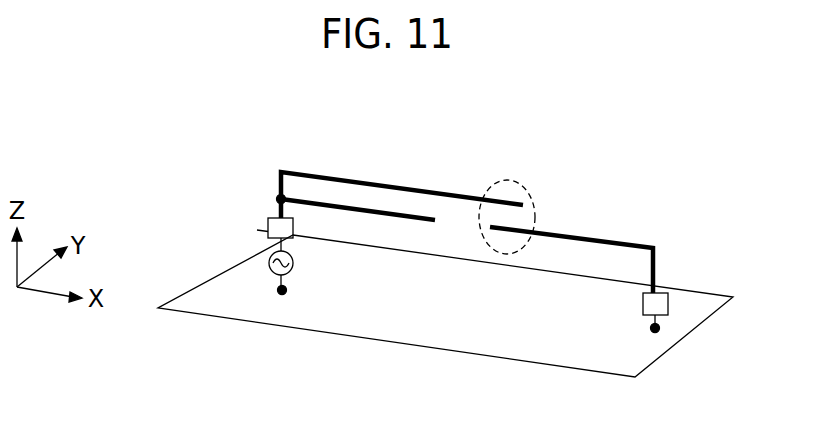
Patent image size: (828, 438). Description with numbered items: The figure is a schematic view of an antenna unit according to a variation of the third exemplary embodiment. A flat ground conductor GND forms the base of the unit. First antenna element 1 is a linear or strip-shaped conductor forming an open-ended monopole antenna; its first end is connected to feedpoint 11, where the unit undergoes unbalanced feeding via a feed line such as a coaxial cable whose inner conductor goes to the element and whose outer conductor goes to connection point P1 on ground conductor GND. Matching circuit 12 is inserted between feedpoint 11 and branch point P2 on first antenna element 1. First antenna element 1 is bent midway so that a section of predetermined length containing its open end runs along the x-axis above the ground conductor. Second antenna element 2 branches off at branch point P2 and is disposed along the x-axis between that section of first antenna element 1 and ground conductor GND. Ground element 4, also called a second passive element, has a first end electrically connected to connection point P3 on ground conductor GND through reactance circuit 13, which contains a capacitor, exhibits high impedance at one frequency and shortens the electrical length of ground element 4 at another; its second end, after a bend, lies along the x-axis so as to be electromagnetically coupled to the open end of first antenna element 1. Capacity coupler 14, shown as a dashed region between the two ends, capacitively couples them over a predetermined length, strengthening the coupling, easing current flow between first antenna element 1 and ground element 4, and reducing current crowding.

The first antenna element 1 is at (305, 174).
The second antenna element 2 is at (412, 216).
The ground element 4 is at (642, 248).
The feedpoint 11 is at (268, 262).
The matching circuit 12 is at (268, 222).
The reactance circuit 13 is at (656, 292).
The capacity coupler 14 is at (528, 192).
The connection point P1 is at (282, 297).
The branch point P2 is at (275, 199).
The connection point P3 is at (655, 335).
The ground conductor GND is at (568, 353).